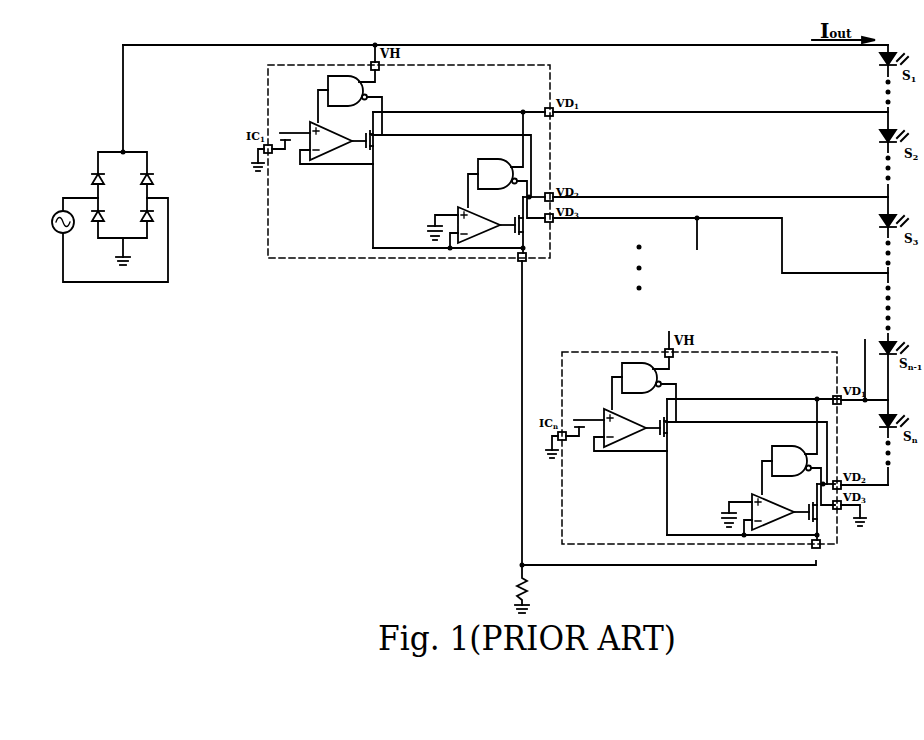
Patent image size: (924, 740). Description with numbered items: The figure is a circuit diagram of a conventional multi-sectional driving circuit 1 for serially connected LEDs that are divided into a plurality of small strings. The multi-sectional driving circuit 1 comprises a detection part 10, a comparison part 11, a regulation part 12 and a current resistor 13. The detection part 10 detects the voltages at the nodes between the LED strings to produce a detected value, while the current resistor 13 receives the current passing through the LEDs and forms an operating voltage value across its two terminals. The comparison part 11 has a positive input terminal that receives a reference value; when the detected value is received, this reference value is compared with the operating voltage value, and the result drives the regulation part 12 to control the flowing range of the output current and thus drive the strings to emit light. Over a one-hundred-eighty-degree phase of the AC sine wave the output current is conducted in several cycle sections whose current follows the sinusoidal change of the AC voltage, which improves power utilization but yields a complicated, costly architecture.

The multi-sectional driving circuit 1 is at (44, 116).
The detection part 10 is at (332, 77).
The comparison part 11 is at (309, 128).
The regulation part 12 is at (373, 137).
The current resistor 13 is at (515, 592).